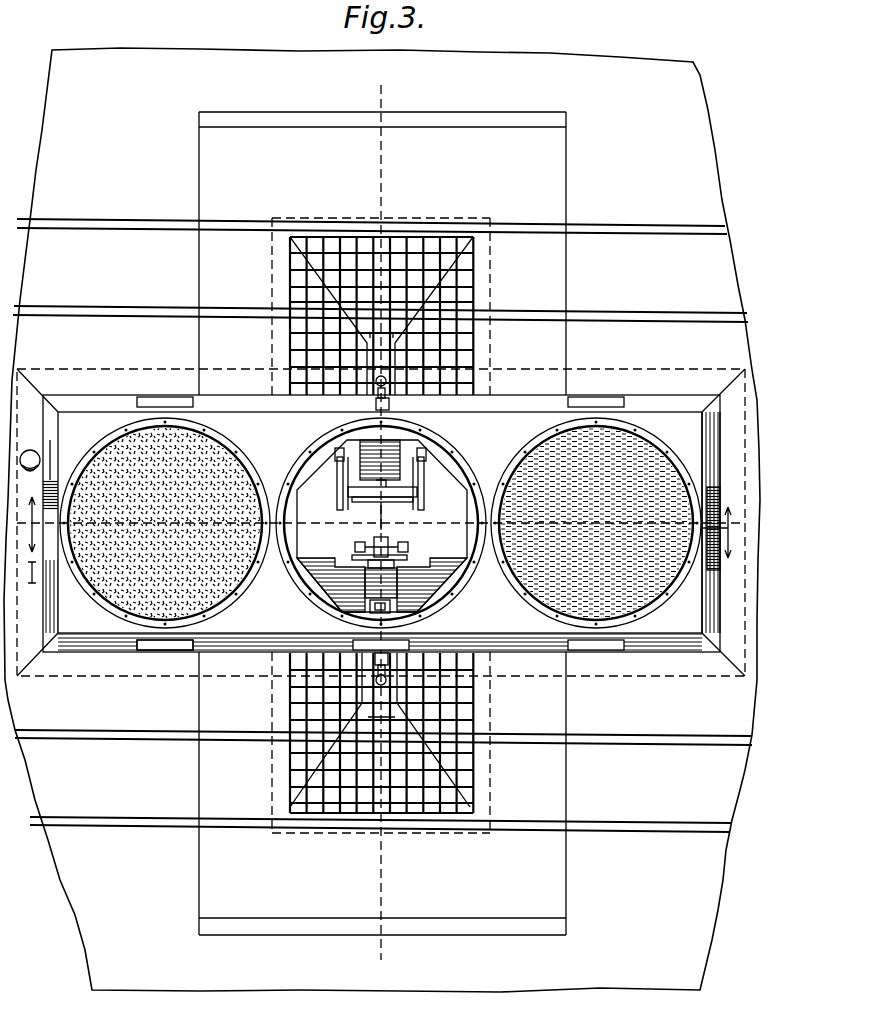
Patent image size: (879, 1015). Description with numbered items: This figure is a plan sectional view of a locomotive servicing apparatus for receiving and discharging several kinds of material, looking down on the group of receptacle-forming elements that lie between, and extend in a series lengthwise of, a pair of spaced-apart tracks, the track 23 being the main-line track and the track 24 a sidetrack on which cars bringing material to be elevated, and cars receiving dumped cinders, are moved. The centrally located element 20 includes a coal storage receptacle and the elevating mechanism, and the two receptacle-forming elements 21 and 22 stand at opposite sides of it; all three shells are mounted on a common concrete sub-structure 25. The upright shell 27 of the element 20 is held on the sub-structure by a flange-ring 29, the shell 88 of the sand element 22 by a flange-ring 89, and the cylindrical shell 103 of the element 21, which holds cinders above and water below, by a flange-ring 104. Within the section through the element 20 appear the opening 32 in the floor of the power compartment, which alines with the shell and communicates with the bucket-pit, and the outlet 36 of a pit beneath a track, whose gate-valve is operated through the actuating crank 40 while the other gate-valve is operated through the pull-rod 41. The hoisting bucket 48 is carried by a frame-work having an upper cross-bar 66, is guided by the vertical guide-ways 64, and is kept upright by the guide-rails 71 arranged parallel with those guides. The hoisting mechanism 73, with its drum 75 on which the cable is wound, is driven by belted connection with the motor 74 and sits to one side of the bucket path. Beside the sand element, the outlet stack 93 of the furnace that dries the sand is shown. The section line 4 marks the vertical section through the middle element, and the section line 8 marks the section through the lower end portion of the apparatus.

The section line 4— 4 is at (412, 97).
The section line 8— 8 is at (384, 540).
The centrally located element 20 is at (373, 530).
The receptacle-forming element 21 is at (650, 456).
The receptacle-forming element 22 is at (103, 449).
The track 23 is at (668, 822).
The track 24 is at (618, 315).
The sub-structure 25 is at (238, 640).
The shell 27 is at (296, 576).
The flange-ring 29 is at (300, 600).
The opening 32 is at (347, 441).
The outlet 36 is at (362, 447).
The actuating crank 40 is at (387, 383).
The pull-rod 41 is at (390, 672).
The hoisting bucket 48 is at (392, 502).
The vertical guide-ways 64 is at (424, 456).
The upper cross-bar 66 is at (360, 498).
The guide-rails 71 is at (423, 492).
The hoisting mechanism 73 is at (381, 504).
The motor 74 is at (397, 582).
The drum 75 is at (397, 548).
The shell 88 is at (80, 585).
The flange-ring 89 is at (103, 614).
The outlet stack 93 is at (30, 450).
The shell 103 is at (692, 568).
The flange-ring 104 is at (690, 590).